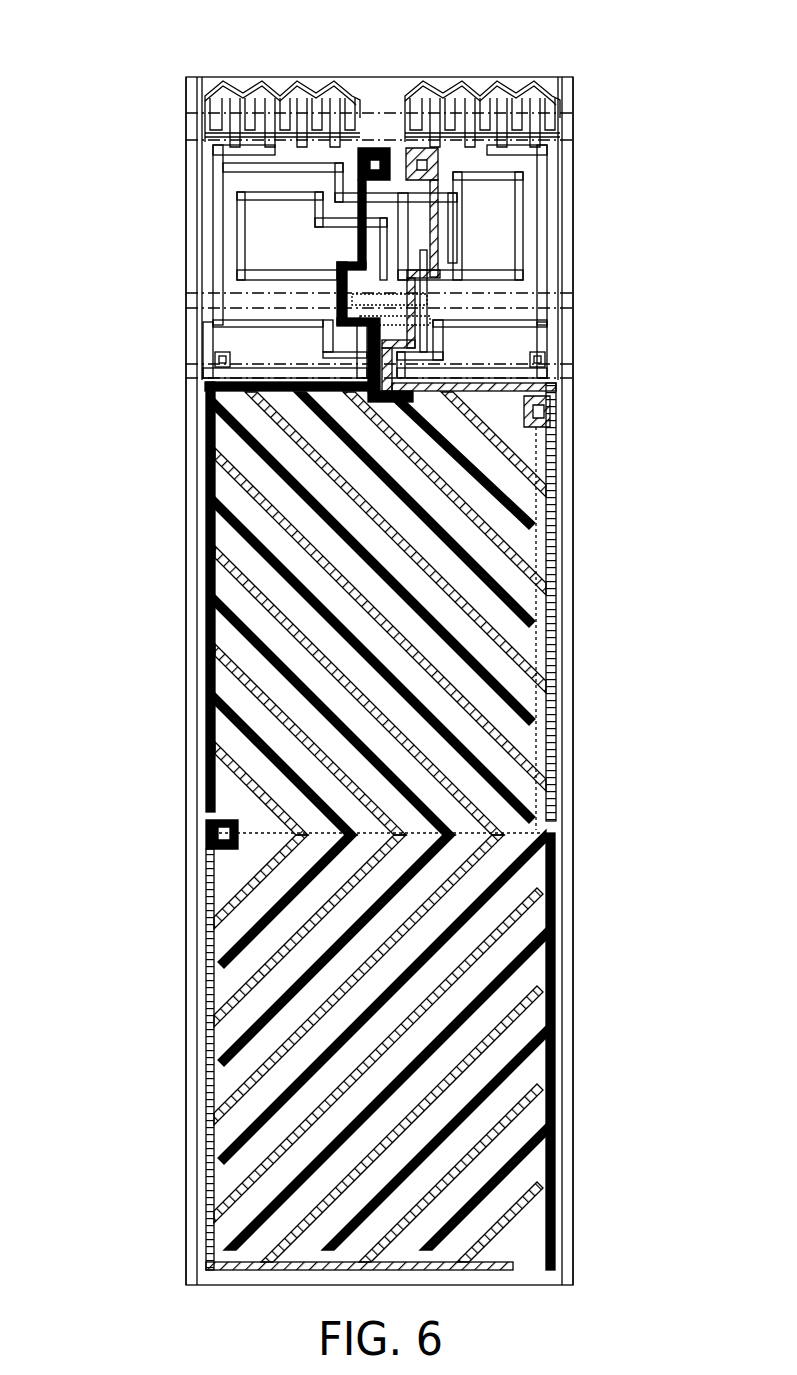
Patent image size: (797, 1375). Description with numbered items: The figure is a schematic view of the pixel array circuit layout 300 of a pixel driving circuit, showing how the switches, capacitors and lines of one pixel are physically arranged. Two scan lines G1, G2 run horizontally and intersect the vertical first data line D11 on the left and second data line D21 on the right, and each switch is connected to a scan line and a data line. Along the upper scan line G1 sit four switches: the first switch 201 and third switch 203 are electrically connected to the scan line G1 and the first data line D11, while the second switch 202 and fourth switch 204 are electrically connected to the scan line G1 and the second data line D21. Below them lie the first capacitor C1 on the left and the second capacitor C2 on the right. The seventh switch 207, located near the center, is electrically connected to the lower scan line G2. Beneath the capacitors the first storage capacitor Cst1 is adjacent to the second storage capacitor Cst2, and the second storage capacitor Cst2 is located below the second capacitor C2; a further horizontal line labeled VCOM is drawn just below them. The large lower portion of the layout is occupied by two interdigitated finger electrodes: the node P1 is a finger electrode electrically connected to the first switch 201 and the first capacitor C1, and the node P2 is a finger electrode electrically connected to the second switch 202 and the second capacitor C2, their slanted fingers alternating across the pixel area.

The pixel structure 300 is at (106, 37).
The first data line D11 is at (192, 77).
The second data line D21 is at (567, 77).
The third switch 203 is at (263, 78).
The first switch 201 is at (330, 77).
The second switch 202 is at (437, 78).
The fourth switch 204 is at (497, 78).
The scan line G1 is at (577, 125).
The scan line G2 is at (577, 300).
The first capacitor C1 is at (275, 229).
The second capacitor C2 is at (488, 229).
The seventh switch 207 is at (397, 298).
The first storage capacitor Cst1 is at (265, 335).
The second storage capacitor Cst2 is at (497, 336).
The common voltage line VCOM is at (577, 370).
The node P1 is at (207, 663).
The node P2 is at (558, 661).